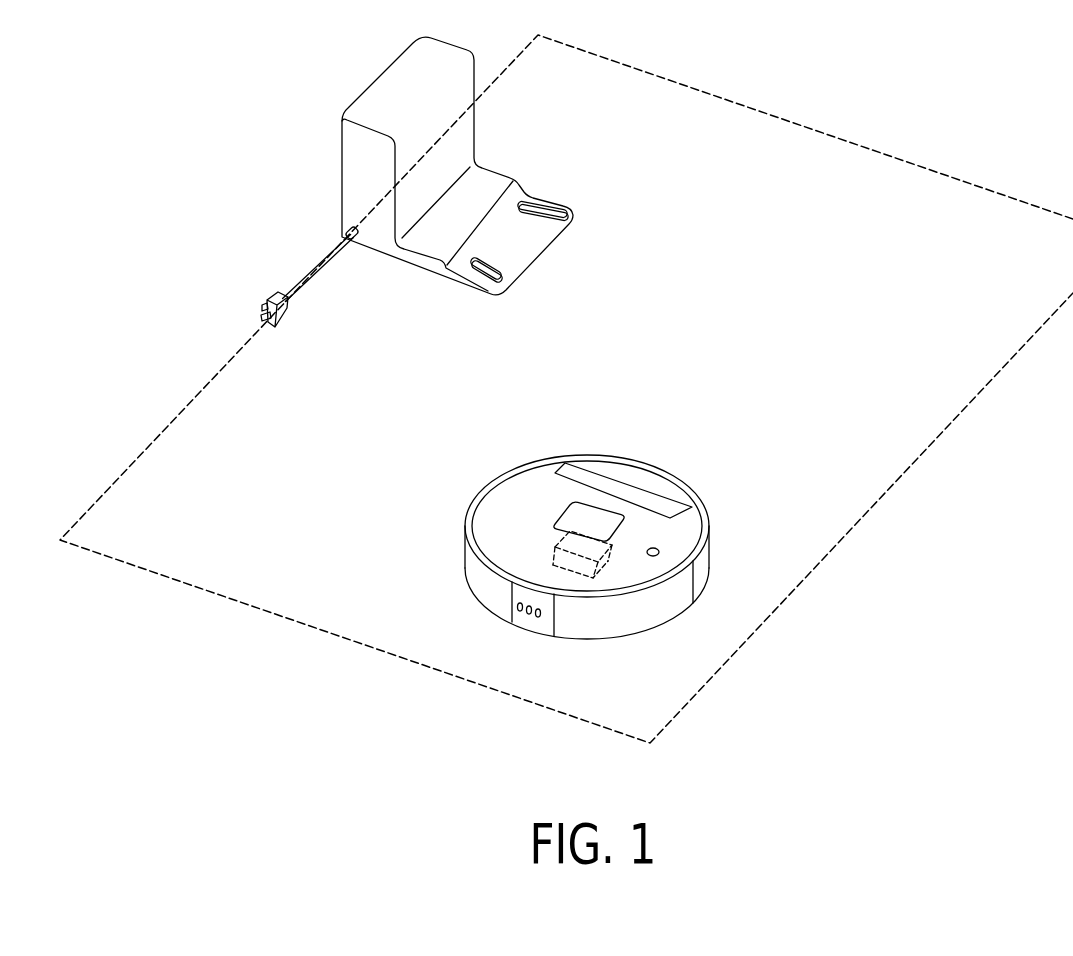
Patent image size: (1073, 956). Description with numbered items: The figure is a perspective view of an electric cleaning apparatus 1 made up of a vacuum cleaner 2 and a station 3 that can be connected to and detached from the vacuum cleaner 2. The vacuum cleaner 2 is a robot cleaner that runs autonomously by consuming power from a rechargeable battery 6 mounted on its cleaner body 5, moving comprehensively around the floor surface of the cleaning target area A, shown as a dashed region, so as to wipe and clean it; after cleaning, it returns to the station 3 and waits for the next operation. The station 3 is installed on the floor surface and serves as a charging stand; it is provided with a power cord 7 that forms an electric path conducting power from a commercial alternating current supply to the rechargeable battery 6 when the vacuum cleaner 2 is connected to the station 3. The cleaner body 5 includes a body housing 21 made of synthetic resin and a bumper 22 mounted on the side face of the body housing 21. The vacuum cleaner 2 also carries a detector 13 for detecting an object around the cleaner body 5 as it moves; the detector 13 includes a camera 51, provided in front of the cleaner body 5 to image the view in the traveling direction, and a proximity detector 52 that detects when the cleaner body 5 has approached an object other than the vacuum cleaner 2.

The electric cleaning apparatus 1 is at (510, 416).
The vacuum cleaner 2 is at (603, 571).
The station 3 is at (453, 183).
The cleaner body 5 is at (715, 511).
The rechargeable battery 6 is at (573, 579).
The power cord 7 is at (316, 266).
The detector 13 is at (501, 699).
The body housing 21 is at (543, 476).
The bumper 22 is at (491, 605).
The camera 51 is at (520, 611).
The proximity detector 52 is at (528, 615).
The cleaning target area A is at (832, 136).